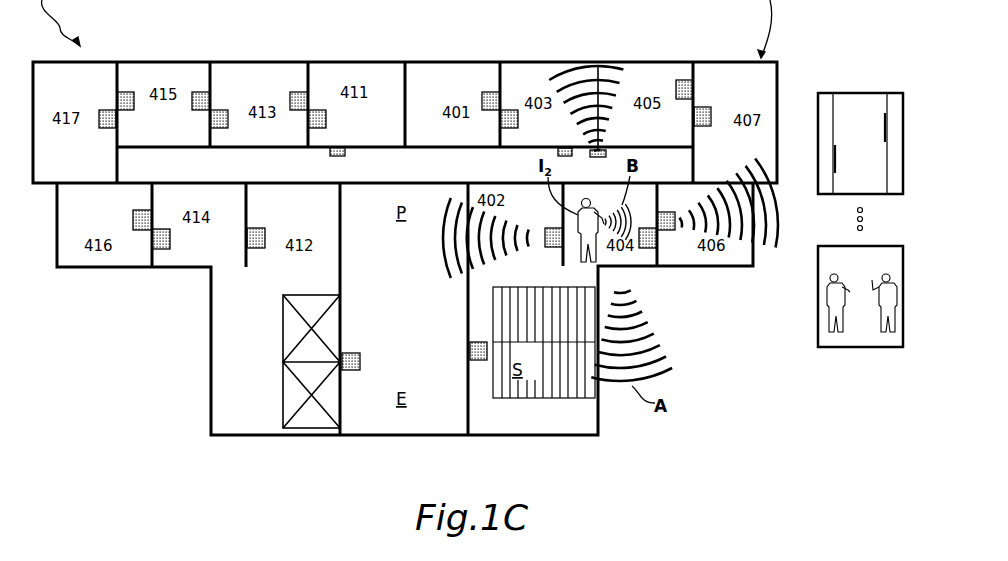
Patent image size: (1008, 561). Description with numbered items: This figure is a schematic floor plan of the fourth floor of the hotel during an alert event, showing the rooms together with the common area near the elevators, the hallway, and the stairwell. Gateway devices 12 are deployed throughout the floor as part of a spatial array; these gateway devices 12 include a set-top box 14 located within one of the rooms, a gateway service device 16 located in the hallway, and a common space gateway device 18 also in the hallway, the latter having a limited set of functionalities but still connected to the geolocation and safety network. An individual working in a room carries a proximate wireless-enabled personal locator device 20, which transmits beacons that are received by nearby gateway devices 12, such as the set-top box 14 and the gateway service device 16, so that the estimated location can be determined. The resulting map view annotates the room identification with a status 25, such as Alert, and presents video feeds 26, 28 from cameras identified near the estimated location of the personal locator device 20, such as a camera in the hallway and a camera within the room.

The gateway device 12 is at (405, 204).
The set-top box 14 is at (657, 212).
The gateway service device 16 is at (352, 372).
The common space gateway device 18 is at (470, 357).
The proximate wireless-enabled personal locator device 20 is at (593, 218).
The status 25 is at (563, 472).
The video feed 26 is at (863, 93).
The video feed 28 is at (862, 347).